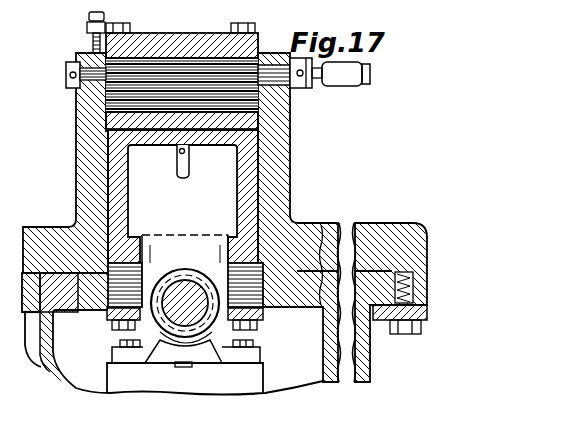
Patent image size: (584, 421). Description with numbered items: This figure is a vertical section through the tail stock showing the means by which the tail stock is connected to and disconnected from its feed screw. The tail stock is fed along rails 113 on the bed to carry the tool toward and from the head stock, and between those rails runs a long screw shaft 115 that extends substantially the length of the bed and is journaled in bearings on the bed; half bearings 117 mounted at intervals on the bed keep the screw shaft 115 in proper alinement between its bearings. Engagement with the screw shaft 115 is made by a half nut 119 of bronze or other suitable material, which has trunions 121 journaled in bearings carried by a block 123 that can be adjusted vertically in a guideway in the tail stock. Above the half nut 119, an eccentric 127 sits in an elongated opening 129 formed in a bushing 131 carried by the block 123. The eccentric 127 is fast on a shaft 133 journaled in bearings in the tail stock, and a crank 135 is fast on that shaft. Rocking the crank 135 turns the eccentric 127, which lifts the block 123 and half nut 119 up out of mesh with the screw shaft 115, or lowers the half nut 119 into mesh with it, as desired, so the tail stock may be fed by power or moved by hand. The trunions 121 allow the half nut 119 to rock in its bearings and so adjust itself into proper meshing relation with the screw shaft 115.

The rails 113 is at (42, 278).
The screw shaft 115 is at (182, 292).
The half bearings 117 is at (182, 342).
The half nut 119 is at (252, 322).
The trunions 121 is at (112, 288).
The block 123 is at (242, 208).
The eccentric 127 is at (262, 99).
The elongated opening 129 is at (178, 112).
The bushing 131 is at (122, 42).
The shaft 133 is at (93, 78).
The crank 135 is at (350, 78).